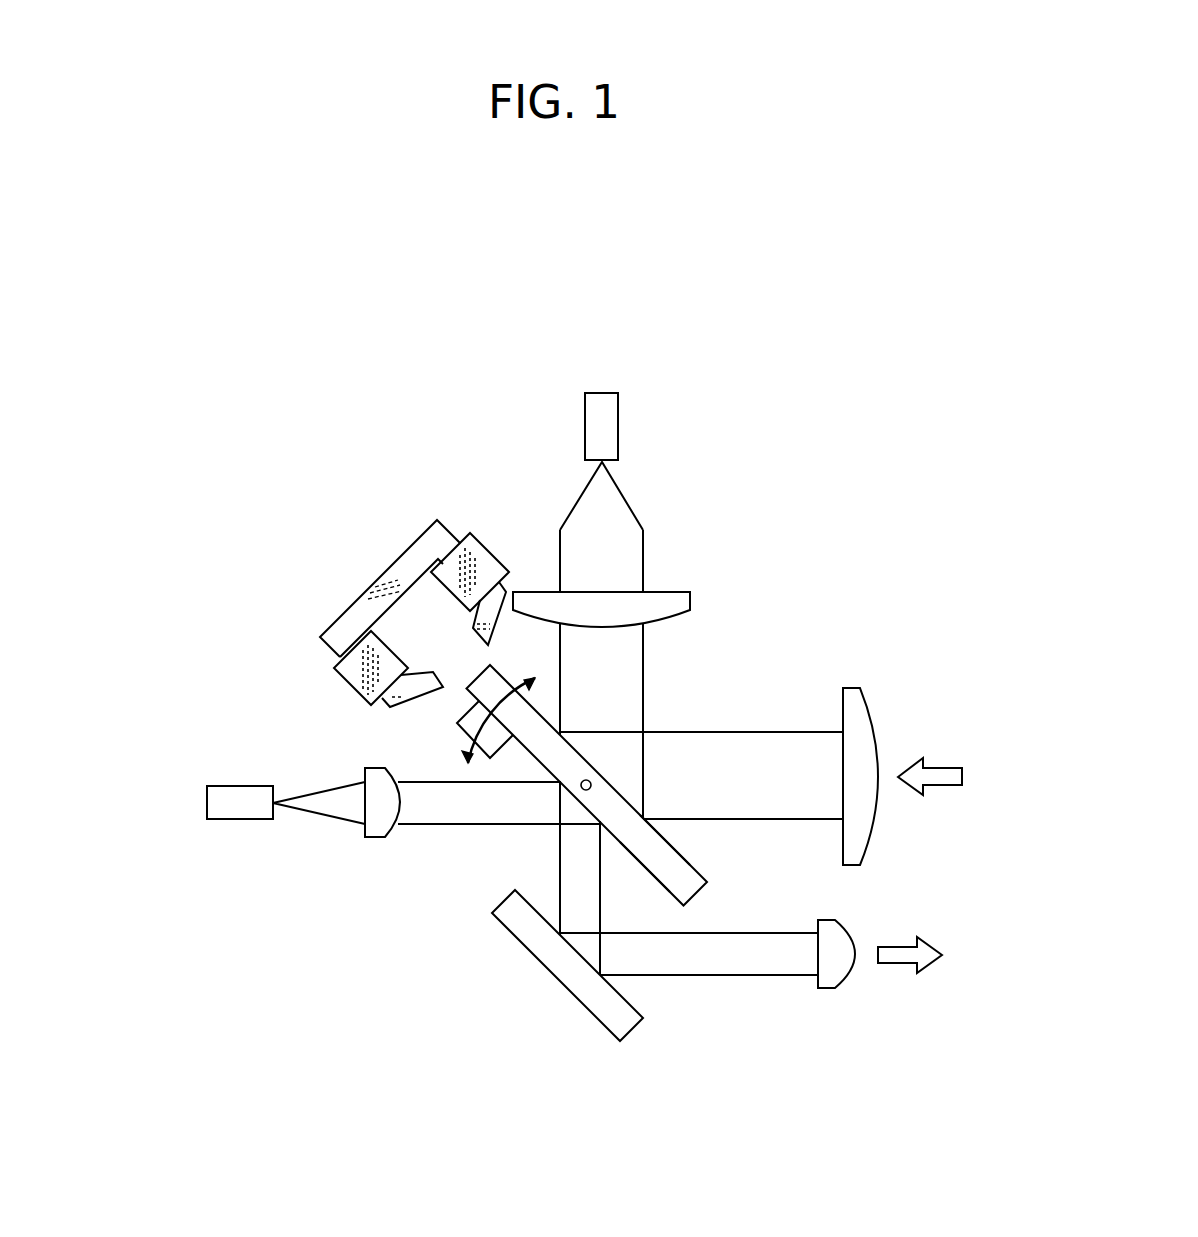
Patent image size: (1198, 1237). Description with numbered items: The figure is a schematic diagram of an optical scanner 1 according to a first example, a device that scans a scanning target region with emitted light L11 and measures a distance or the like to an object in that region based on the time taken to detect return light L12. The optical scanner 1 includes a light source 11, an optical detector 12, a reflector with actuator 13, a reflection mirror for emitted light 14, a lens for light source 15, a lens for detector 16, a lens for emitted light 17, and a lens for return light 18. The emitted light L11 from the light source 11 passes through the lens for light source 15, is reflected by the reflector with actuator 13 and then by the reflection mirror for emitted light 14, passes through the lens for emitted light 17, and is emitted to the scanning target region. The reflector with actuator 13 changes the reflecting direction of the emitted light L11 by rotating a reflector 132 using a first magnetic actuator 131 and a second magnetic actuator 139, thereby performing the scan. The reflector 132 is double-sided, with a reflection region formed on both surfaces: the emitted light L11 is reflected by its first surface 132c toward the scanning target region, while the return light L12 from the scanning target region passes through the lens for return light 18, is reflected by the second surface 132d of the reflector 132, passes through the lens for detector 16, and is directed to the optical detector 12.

The optical scanner 1 is at (796, 342).
The light source 11 is at (237, 822).
The optical detector 12 is at (600, 393).
The reflector with actuator 13 is at (393, 562).
The first magnetic actuator 131 is at (369, 588).
The second magnetic actuator 139 is at (375, 582).
The reflector 132 is at (632, 796).
The first surface 132c is at (633, 860).
The second surface 132d is at (700, 847).
The reflection mirror for emitted light 14 is at (587, 1013).
The lens for light source 15 is at (373, 838).
The lens for detector 16 is at (677, 591).
The lens for emitted light 17 is at (827, 990).
The lens for return light 18 is at (853, 687).
The emitted light L11 is at (317, 788).
The return light L12 is at (632, 496).